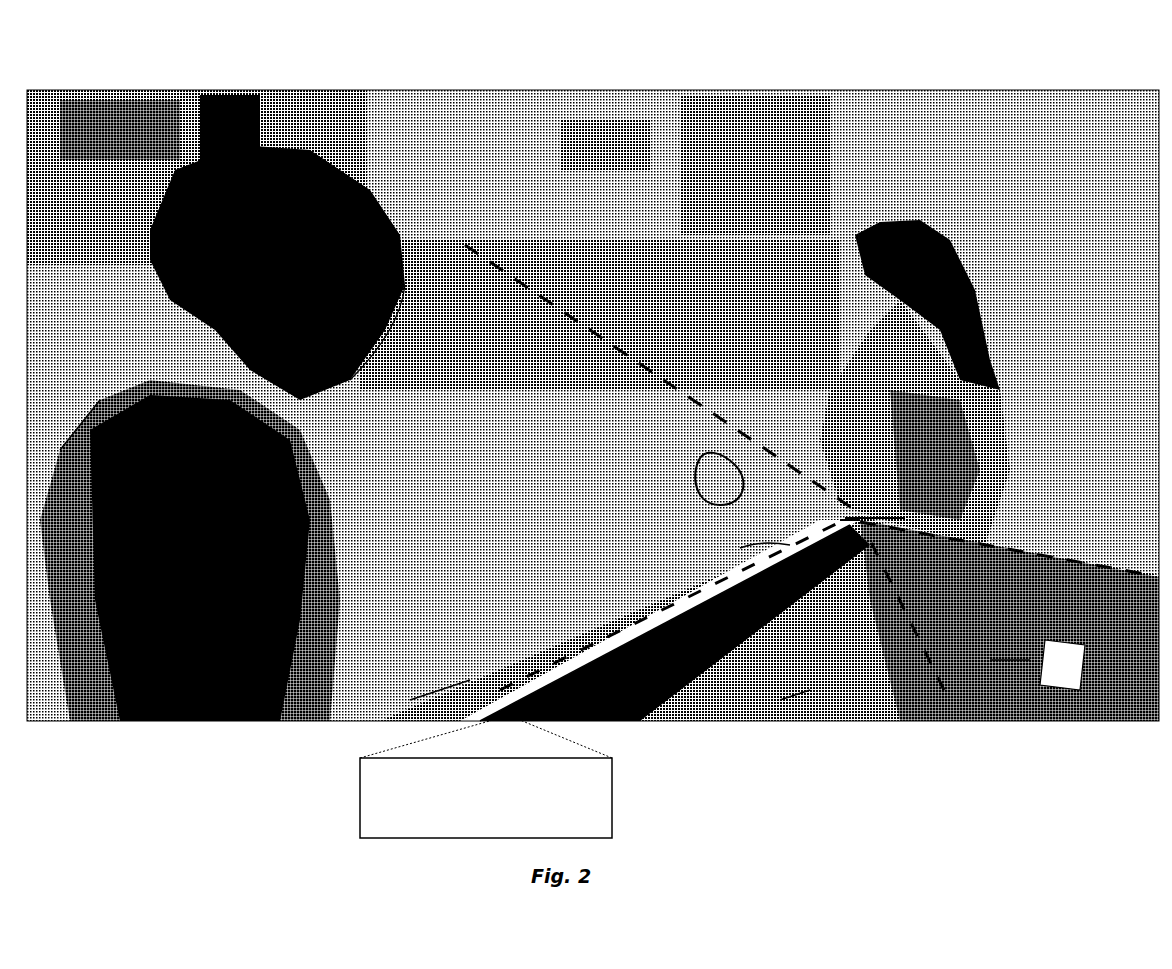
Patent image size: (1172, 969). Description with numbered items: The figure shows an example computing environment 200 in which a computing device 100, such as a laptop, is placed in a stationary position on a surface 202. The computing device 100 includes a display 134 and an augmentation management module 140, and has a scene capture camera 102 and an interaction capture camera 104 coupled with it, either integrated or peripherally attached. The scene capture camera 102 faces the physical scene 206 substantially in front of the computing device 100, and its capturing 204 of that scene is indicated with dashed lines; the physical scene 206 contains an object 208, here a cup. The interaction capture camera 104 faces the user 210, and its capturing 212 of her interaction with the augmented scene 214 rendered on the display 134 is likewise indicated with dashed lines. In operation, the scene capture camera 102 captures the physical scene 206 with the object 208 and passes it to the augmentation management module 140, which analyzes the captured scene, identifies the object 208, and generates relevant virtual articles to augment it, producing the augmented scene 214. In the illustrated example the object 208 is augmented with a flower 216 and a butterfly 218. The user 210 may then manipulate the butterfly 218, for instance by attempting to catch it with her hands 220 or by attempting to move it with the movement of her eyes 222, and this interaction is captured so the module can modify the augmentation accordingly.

The computing device 100 is at (613, 720).
The scene capture camera 102 is at (908, 516).
The interaction capture camera 104 is at (849, 530).
The display 134 is at (730, 635).
The augmentation management module 140 is at (486, 779).
The computing environment 200 is at (272, 66).
The surface 202 is at (795, 700).
The capturing of the physical scene 204 is at (944, 700).
The physical scene 206 is at (1008, 670).
The object 208 is at (1045, 690).
The user 210 is at (200, 635).
The capturing of user interaction 212 is at (560, 305).
The augmented scene 214 is at (773, 590).
The flower 216 is at (733, 548).
The butterfly 218 is at (690, 468).
The hands 220 is at (420, 695).
The eyes 222 is at (415, 265).